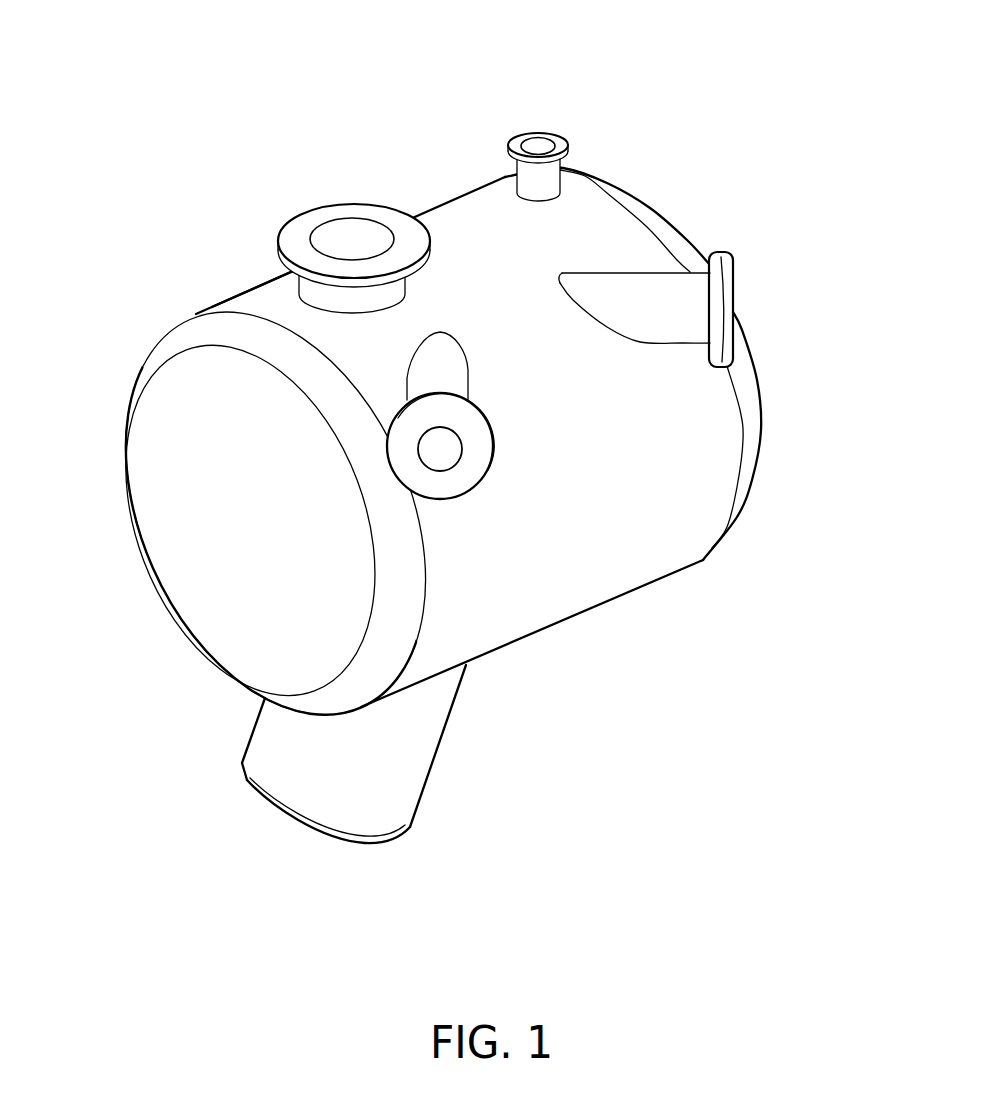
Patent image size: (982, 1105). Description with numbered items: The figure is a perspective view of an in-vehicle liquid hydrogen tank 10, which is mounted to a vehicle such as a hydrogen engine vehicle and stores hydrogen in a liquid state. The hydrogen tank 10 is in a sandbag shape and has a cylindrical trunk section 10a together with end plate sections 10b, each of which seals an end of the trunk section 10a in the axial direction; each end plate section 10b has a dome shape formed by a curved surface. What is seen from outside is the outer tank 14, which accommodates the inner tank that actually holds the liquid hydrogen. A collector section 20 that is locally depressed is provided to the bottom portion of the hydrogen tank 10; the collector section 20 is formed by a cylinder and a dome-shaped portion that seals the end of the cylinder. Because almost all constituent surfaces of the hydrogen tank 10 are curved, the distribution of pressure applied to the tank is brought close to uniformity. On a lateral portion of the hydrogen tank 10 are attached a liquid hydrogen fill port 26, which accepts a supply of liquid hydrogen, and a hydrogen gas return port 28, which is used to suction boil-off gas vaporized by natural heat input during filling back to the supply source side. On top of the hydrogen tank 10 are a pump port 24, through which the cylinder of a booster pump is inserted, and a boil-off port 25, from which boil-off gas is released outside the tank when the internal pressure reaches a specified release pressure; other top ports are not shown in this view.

The liquid hydrogen tank 10 is at (461, 381).
The cylindrical trunk section 10a is at (632, 548).
The end plate section 10b is at (760, 378).
The outer tank 14 is at (448, 230).
The collector section 20 is at (400, 765).
The pump port 24 is at (313, 223).
The boil-off port 25 is at (540, 128).
The liquid hydrogen fill port 26 is at (448, 373).
The hydrogen gas return port 28 is at (648, 297).